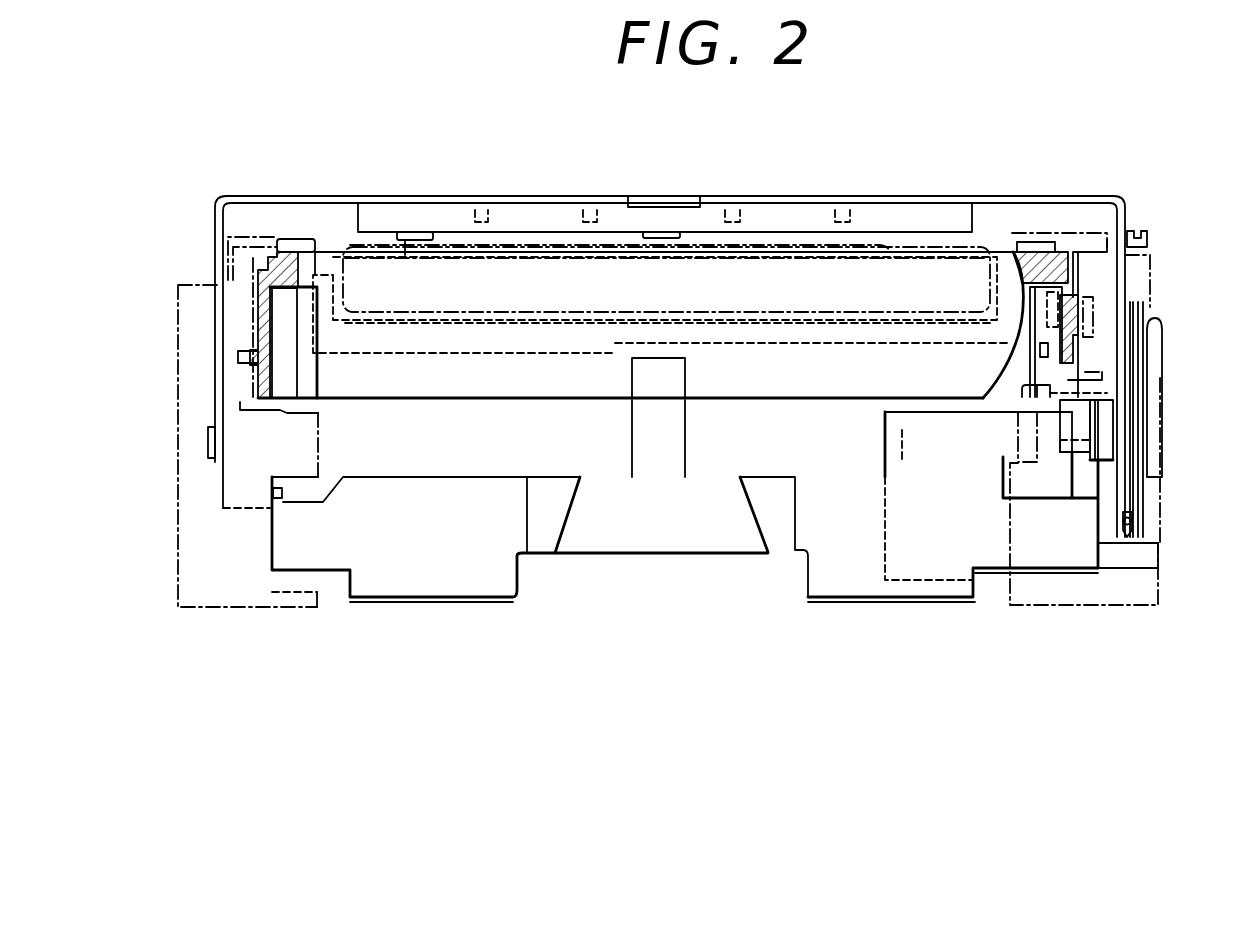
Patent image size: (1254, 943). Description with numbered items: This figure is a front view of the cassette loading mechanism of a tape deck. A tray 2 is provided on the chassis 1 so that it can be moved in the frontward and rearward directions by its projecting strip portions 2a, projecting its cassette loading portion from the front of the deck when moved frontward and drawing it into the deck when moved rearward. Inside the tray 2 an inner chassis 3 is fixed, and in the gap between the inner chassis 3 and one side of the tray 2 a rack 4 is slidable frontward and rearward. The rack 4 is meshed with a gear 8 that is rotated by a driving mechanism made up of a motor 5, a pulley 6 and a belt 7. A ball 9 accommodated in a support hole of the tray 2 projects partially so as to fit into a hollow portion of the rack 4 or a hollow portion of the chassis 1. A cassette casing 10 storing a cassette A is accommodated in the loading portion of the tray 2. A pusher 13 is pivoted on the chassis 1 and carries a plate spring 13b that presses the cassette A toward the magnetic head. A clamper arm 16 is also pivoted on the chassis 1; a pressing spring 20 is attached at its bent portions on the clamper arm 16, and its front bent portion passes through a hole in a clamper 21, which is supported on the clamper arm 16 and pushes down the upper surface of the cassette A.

The chassis 1 is at (188, 460).
The tray 2 is at (257, 310).
The projecting strip portions 2a is at (237, 365).
The inner chassis 3 is at (997, 380).
The rack 4 is at (1115, 383).
The motor 5 is at (990, 583).
The pulley 6 is at (1143, 495).
The belt 7 is at (1143, 527).
The gear 8 is at (1085, 430).
The ball 9 is at (1080, 315).
The cassette casing 10 is at (405, 330).
The pusher 13 is at (445, 565).
The plate spring 13b is at (657, 447).
The clamper arm 16 is at (1115, 192).
The pressing spring 20 is at (665, 197).
The clamper 21 is at (882, 222).
The cassette A is at (933, 275).